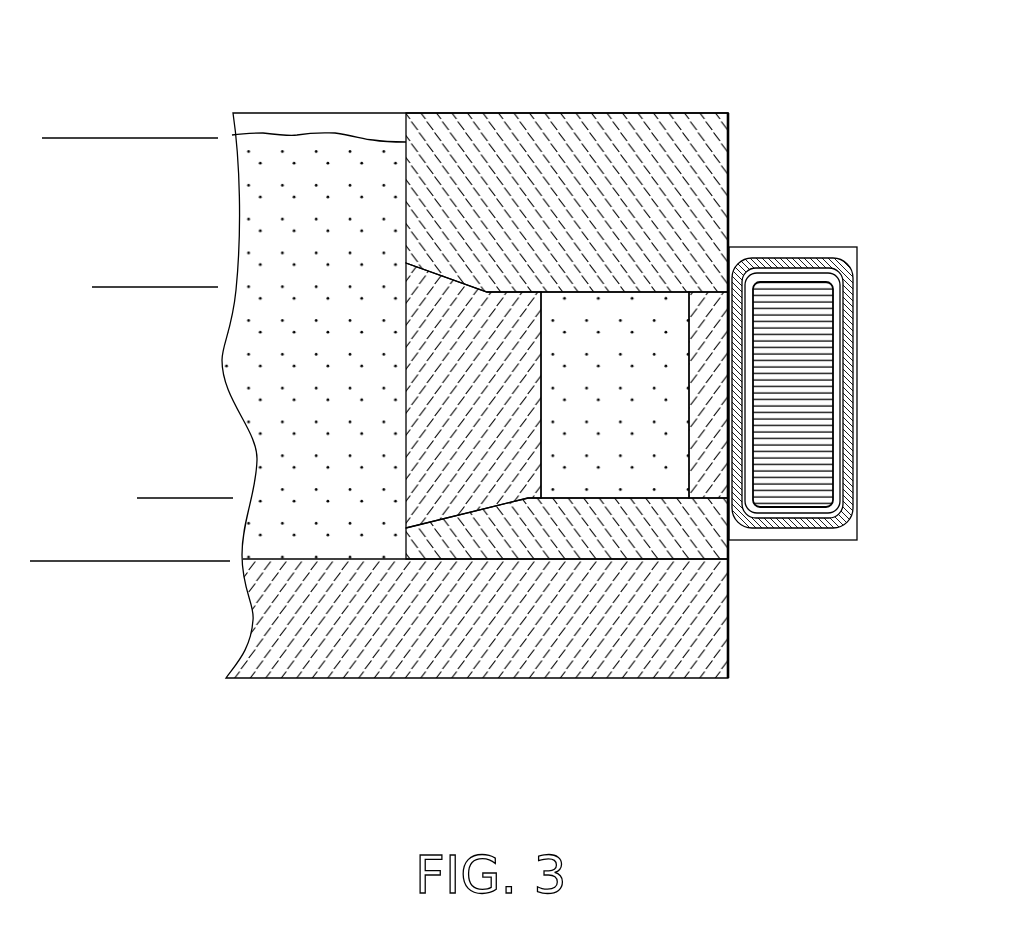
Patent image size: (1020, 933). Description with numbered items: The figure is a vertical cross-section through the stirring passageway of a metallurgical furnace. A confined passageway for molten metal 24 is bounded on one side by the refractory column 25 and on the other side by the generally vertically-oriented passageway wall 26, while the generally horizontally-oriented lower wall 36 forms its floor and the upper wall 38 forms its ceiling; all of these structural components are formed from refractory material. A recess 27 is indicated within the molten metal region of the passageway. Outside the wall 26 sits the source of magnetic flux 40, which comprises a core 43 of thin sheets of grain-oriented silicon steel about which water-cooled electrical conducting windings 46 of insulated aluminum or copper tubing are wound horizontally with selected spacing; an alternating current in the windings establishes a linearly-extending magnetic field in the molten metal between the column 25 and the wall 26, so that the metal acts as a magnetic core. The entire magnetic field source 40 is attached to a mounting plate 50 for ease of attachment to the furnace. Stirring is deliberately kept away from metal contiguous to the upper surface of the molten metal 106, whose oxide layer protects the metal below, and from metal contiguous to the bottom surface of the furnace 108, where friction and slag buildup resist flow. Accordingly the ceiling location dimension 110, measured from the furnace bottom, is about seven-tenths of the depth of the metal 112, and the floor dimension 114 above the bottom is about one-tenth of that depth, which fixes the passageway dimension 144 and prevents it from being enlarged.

The molten metal 24 is at (584, 411).
The column 25 is at (431, 411).
The passageway wall 26 is at (698, 404).
The recess 27 is at (618, 350).
The lower wall 36 is at (582, 547).
The upper wall 38 is at (566, 236).
The source of magnetic flux 40 is at (819, 226).
The core 43 is at (777, 394).
The water-cooled electrical conducting windings 46 is at (853, 292).
The mounting plate 50 is at (728, 113).
The upper surface of the molten metal 106 is at (315, 137).
The bottom surface of the furnace 108 is at (340, 559).
The ceiling location dimension 110 is at (103, 561).
The depth of the metal 112 is at (57, 138).
The floor dimension 114 is at (159, 498).
The passageway dimension 144 is at (189, 287).